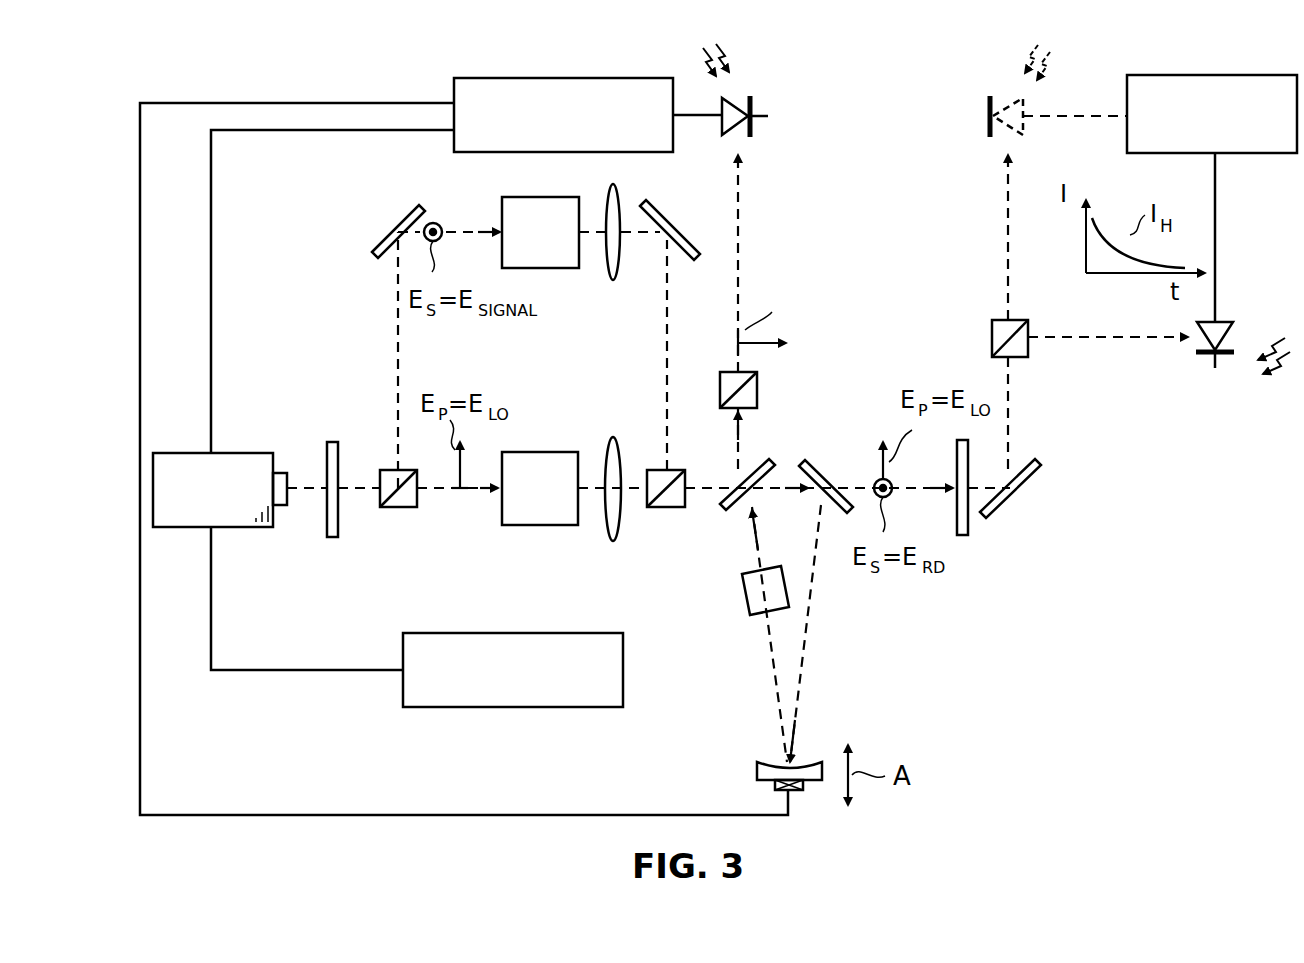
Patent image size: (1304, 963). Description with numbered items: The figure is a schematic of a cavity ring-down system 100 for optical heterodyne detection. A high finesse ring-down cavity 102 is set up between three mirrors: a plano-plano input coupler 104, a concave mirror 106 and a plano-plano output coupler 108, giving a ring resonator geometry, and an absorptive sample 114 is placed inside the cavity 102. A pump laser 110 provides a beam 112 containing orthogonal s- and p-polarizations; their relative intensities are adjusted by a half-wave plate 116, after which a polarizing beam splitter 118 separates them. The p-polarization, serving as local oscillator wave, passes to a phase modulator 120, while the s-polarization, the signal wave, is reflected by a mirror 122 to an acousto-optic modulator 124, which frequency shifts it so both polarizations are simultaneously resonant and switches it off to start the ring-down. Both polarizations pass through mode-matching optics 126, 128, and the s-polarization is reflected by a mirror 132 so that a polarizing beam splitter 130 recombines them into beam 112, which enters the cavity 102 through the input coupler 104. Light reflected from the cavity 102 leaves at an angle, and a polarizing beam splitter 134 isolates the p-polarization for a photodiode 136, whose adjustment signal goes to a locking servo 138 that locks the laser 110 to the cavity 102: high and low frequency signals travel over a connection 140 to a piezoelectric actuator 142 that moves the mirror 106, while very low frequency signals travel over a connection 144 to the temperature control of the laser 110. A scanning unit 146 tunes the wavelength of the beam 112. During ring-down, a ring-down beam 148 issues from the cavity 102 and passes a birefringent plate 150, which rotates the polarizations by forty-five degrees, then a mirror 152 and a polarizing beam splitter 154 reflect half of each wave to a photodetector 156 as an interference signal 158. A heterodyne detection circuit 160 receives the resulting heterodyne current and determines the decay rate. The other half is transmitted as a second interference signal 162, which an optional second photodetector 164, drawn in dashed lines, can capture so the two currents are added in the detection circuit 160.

The cavity ring-down system 100 is at (1075, 624).
The ring-down cavity 102 is at (872, 640).
The input coupler mirror 104 is at (730, 506).
The concave mirror 106 is at (778, 768).
The output coupler mirror 108 is at (815, 468).
The pump laser 110 is at (260, 453).
The pump beam 112 is at (347, 488).
The absorptive sample 114 is at (745, 600).
The half-wave plate 116 is at (333, 537).
The polarizing beam splitter 118 is at (400, 508).
The phase modulator 120 is at (562, 452).
The mirror 122 is at (404, 220).
The acousto-optic modulator 124 is at (502, 215).
The mode-matching optics 126 is at (613, 280).
The mode-matching optics 128 is at (613, 437).
The polarizing beam splitter 130 is at (665, 508).
The mirror 132 is at (689, 240).
The polarizing beam splitter 134 is at (757, 378).
The photodiode 136 is at (755, 110).
The locking servo 138 is at (535, 78).
The connection 140 is at (440, 813).
The piezoelectric actuator 142 is at (775, 785).
The connection 144 is at (212, 230).
The scanning unit 146 is at (465, 633).
The ring-down beam 148 is at (875, 480).
The birefringent plate 150 is at (963, 535).
The mirror 152 is at (1000, 510).
The polarizing beam splitter 154 is at (992, 328).
The photodetector 156 is at (1213, 356).
The interference signal 158 is at (1080, 340).
The heterodyne detection circuit 160 is at (1272, 153).
The second interference signal 162 is at (1008, 226).
The second photodetector 164 is at (990, 105).